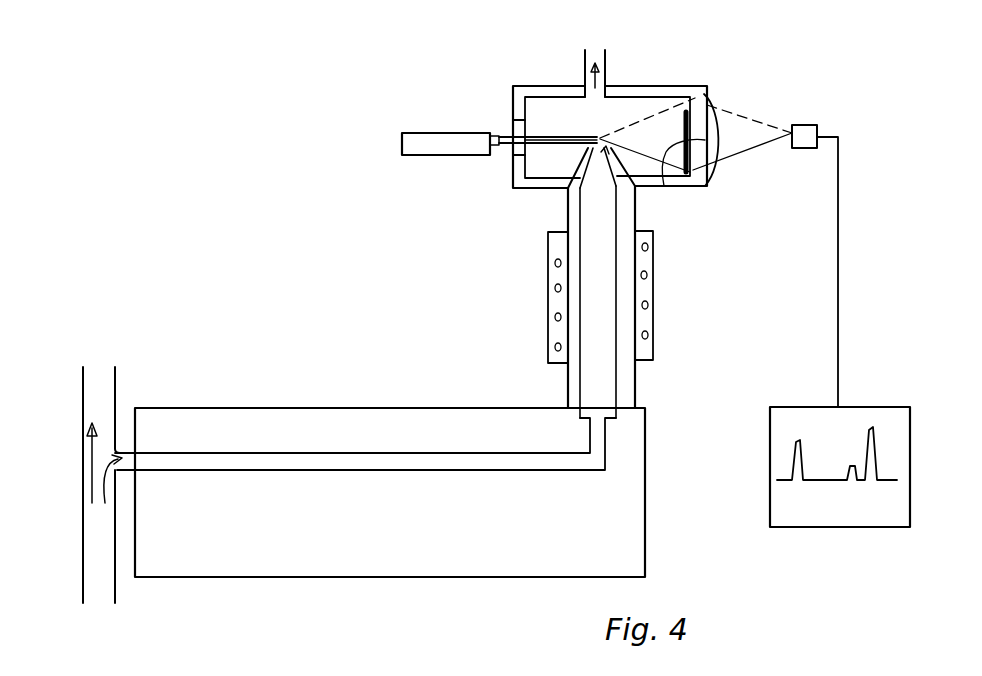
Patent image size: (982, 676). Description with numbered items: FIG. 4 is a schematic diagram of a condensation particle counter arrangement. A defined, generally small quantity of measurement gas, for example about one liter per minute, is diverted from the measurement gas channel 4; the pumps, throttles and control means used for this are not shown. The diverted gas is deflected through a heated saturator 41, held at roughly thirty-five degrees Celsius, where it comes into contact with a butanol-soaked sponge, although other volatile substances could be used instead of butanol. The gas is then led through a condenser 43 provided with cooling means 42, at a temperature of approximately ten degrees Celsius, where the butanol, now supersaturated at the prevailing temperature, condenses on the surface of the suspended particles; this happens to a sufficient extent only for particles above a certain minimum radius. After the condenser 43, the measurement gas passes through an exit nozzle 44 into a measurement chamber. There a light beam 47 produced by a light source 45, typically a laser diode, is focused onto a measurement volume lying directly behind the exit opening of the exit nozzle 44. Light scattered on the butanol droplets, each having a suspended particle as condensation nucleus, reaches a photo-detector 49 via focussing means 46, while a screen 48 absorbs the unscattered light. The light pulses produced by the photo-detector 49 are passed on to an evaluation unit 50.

The measurement gas channel 4 is at (100, 395).
The heated saturator 41 is at (302, 435).
The cooling means 42 is at (653, 332).
The condenser 43 is at (623, 340).
The exit nozzle 44 is at (572, 175).
The light source 45 is at (455, 140).
The focussing means 46 is at (705, 140).
The light beam 47 is at (547, 137).
The screen 48 is at (667, 188).
The photo-detector 49 is at (815, 128).
The evaluation unit 50 is at (802, 510).